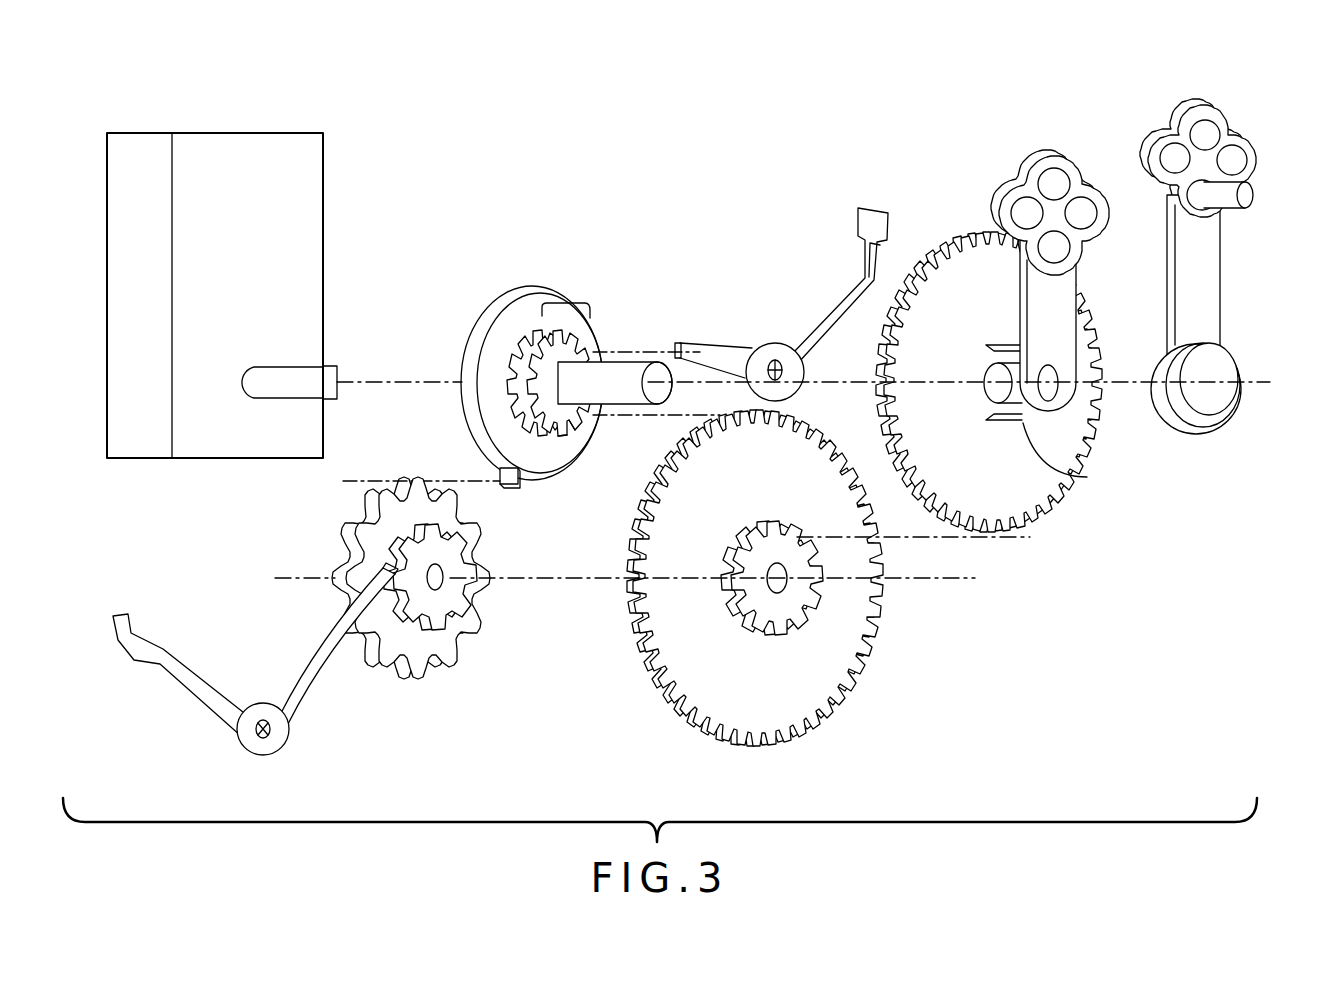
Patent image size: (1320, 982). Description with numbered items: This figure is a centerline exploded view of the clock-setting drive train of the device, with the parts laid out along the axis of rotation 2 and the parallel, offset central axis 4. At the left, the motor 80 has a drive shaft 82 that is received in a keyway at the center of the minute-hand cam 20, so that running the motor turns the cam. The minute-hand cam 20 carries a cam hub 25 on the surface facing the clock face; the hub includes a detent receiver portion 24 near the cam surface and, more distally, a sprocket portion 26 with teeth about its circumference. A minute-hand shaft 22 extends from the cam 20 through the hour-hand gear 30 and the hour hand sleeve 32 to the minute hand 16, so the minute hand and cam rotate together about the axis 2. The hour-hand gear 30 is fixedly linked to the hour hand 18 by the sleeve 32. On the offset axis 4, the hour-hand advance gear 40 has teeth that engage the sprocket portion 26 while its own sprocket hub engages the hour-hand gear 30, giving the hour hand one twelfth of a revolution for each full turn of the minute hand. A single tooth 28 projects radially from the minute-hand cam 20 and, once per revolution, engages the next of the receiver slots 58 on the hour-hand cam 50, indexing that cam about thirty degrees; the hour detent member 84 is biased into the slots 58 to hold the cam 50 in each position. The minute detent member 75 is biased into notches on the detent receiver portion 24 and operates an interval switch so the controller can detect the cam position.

The axis of rotation 2 is at (1263, 380).
The central axis 4 is at (962, 582).
The minute hand 16 is at (1205, 107).
The hour hand 18 is at (1050, 157).
The minute-hand cam 20 is at (530, 288).
The minute-hand shaft 22 is at (628, 378).
The detent receiver portion 24 is at (552, 436).
The cam hub 25 is at (567, 303).
The sprocket portion 26 is at (578, 418).
The tooth 28 is at (518, 486).
The hour-hand gear 30 is at (972, 231).
The hour hand sleeve 32 is at (1087, 477).
The hour-hand advance gear 40 is at (808, 734).
The hour-hand cam 50 is at (367, 494).
The receiver slots 58 is at (420, 525).
The minute detent member 75 is at (850, 300).
The motor 80 is at (320, 207).
The drive shaft 82 is at (303, 367).
The hour detent member 84 is at (318, 652).